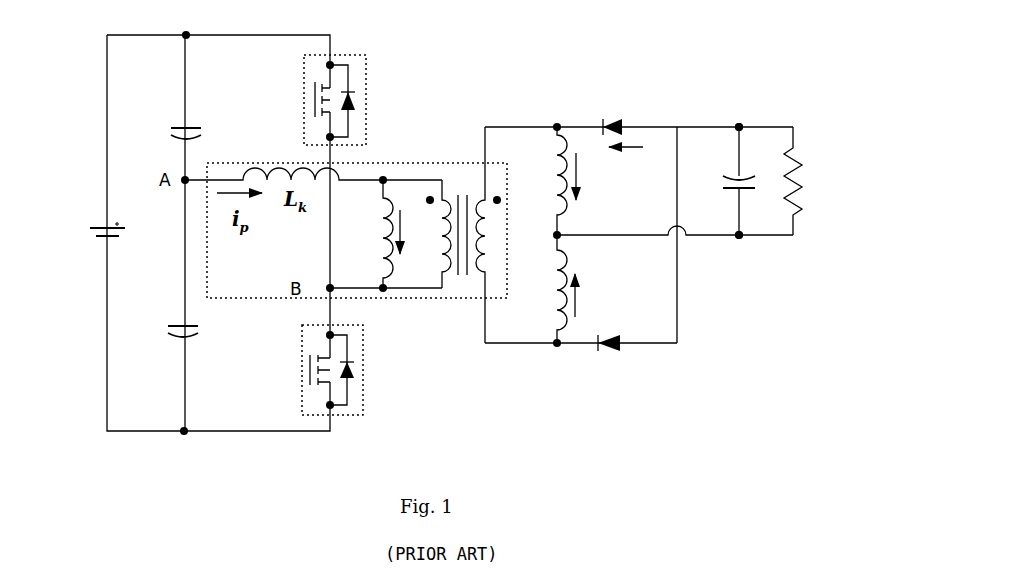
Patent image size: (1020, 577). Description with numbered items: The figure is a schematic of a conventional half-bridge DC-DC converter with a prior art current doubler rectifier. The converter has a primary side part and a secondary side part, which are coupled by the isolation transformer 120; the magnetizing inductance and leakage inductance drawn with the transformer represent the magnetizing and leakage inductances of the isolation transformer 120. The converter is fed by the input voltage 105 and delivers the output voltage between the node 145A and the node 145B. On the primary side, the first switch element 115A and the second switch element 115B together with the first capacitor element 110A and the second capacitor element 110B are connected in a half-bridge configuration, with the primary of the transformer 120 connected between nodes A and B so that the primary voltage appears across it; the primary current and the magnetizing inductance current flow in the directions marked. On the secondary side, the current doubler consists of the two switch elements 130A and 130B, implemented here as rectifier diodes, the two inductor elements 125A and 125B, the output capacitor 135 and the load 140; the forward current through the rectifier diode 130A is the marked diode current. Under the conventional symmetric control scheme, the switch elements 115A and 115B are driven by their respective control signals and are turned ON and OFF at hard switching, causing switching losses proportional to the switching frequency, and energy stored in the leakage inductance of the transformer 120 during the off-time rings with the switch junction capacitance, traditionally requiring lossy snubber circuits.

The input voltage 105 is at (78, 205).
The capacitor element 110A is at (170, 118).
The capacitor element 110B is at (155, 355).
The switch element 115A is at (369, 421).
The switch element 115B is at (412, 57).
The isolation transformer 120 is at (424, 160).
The inductor element 125A is at (547, 150).
The inductor element 125B is at (541, 326).
The switch element 130A is at (599, 105).
The switch element 130B is at (600, 366).
The output capacitor 135 is at (721, 150).
The load 140 is at (808, 219).
The node 145A is at (744, 252).
The node 145B is at (743, 110).